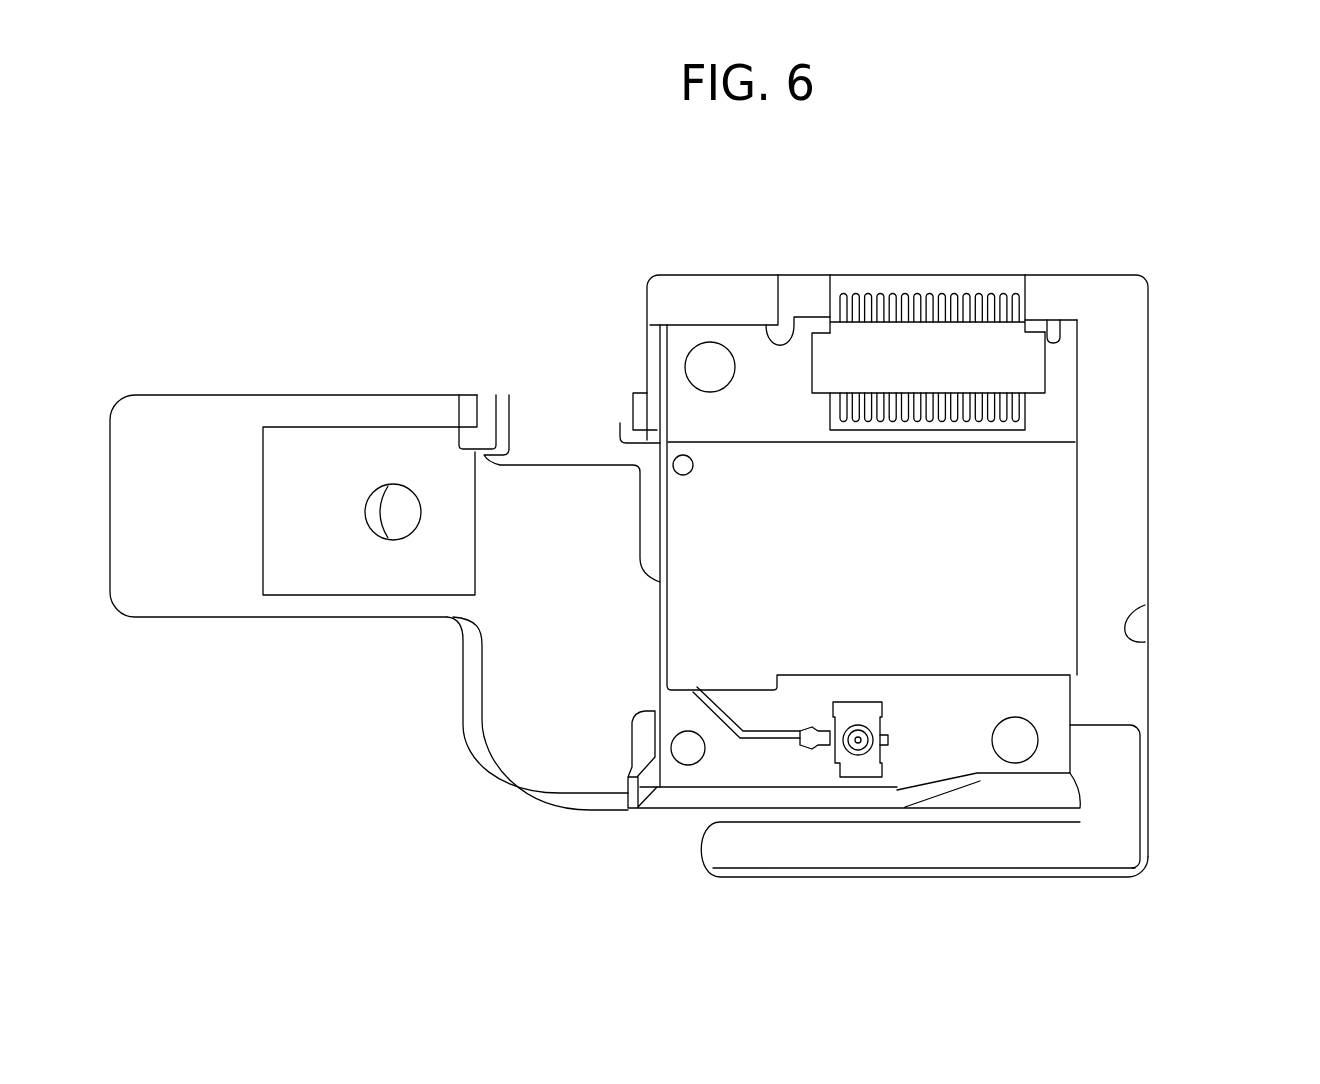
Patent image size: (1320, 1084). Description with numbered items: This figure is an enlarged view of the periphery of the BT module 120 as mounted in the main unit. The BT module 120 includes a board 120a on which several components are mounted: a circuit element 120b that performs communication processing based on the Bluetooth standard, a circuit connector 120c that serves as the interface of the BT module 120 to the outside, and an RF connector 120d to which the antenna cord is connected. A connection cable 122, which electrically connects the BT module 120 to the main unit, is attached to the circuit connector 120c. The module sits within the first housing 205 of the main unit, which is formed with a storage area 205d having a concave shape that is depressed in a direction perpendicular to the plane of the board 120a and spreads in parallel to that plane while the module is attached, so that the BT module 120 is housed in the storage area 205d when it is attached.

The first housing 205 is at (595, 313).
The storage area 205d is at (1124, 620).
The BT module 120 is at (1088, 527).
The board 120a is at (1080, 360).
The circuit element 120b is at (686, 634).
The circuit connector 120c is at (1047, 383).
The RF connector 120d is at (830, 765).
The connection cable 122 is at (1035, 300).